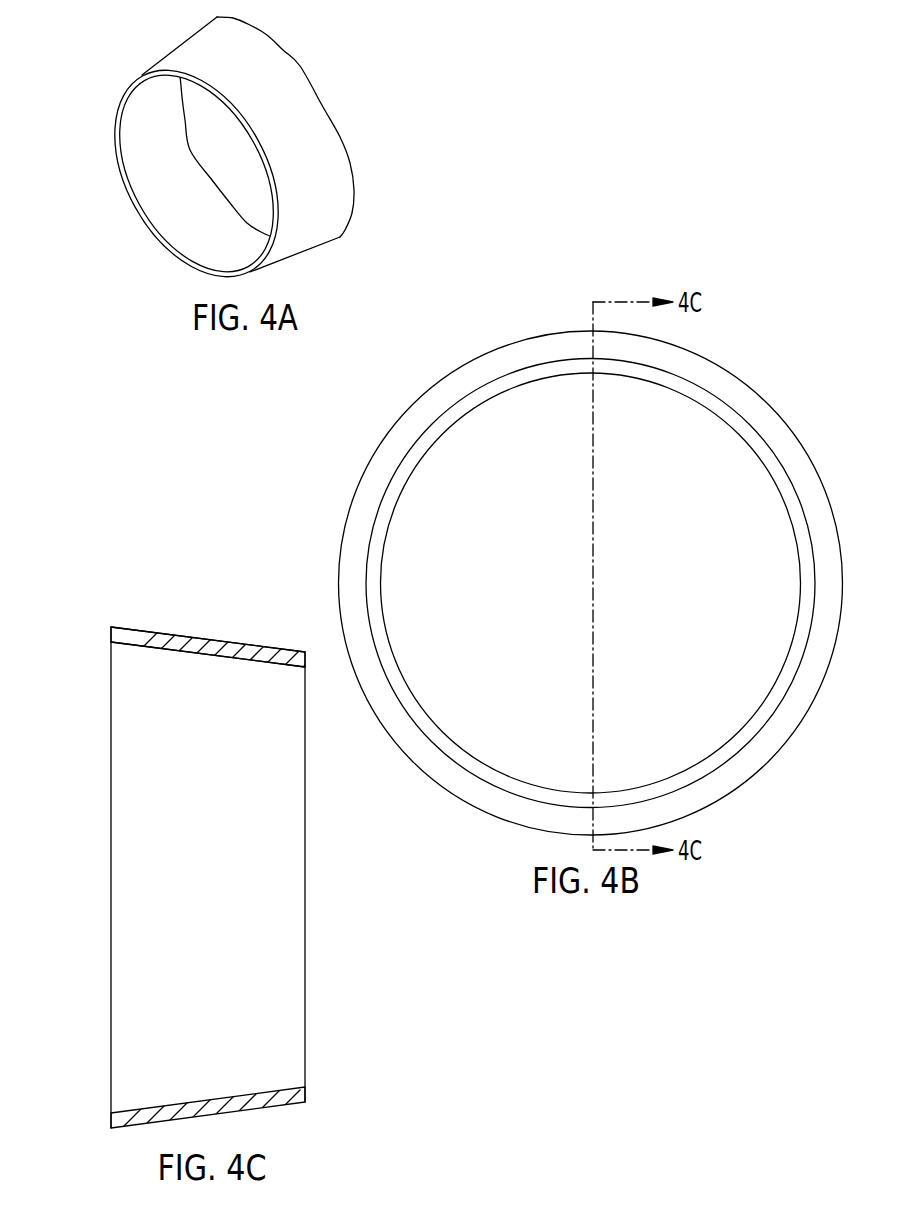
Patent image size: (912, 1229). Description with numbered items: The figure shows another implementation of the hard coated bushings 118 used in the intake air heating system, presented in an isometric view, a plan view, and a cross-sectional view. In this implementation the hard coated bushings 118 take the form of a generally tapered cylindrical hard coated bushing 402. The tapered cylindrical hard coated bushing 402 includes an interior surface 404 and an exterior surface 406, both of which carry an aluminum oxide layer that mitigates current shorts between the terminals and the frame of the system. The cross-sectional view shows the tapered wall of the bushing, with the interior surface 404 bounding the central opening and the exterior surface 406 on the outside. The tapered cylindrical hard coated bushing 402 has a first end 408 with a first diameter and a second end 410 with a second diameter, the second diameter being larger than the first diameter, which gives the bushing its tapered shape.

In FIG. 4A, the hard coated bushing 118 is at (137, 200).
In FIG. 4B, the hard coated bushing 118 is at (368, 463).
In FIG. 4C, the hard coated bushing 118 is at (130, 628).
In FIG. 4A, the tapered cylindrical hard coated bushing 402 is at (332, 200).
In FIG. 4B, the tapered cylindrical hard coated bushing 402 is at (708, 360).
In FIG. 4C, the tapered cylindrical hard coated bushing 402 is at (190, 645).
In FIG. 4C, the interior surface 404 is at (223, 653).
In FIG. 4C, the exterior surface 406 is at (240, 642).
In FIG. 4C, the first end 408 is at (305, 987).
In FIG. 4C, the second end 410 is at (110, 812).